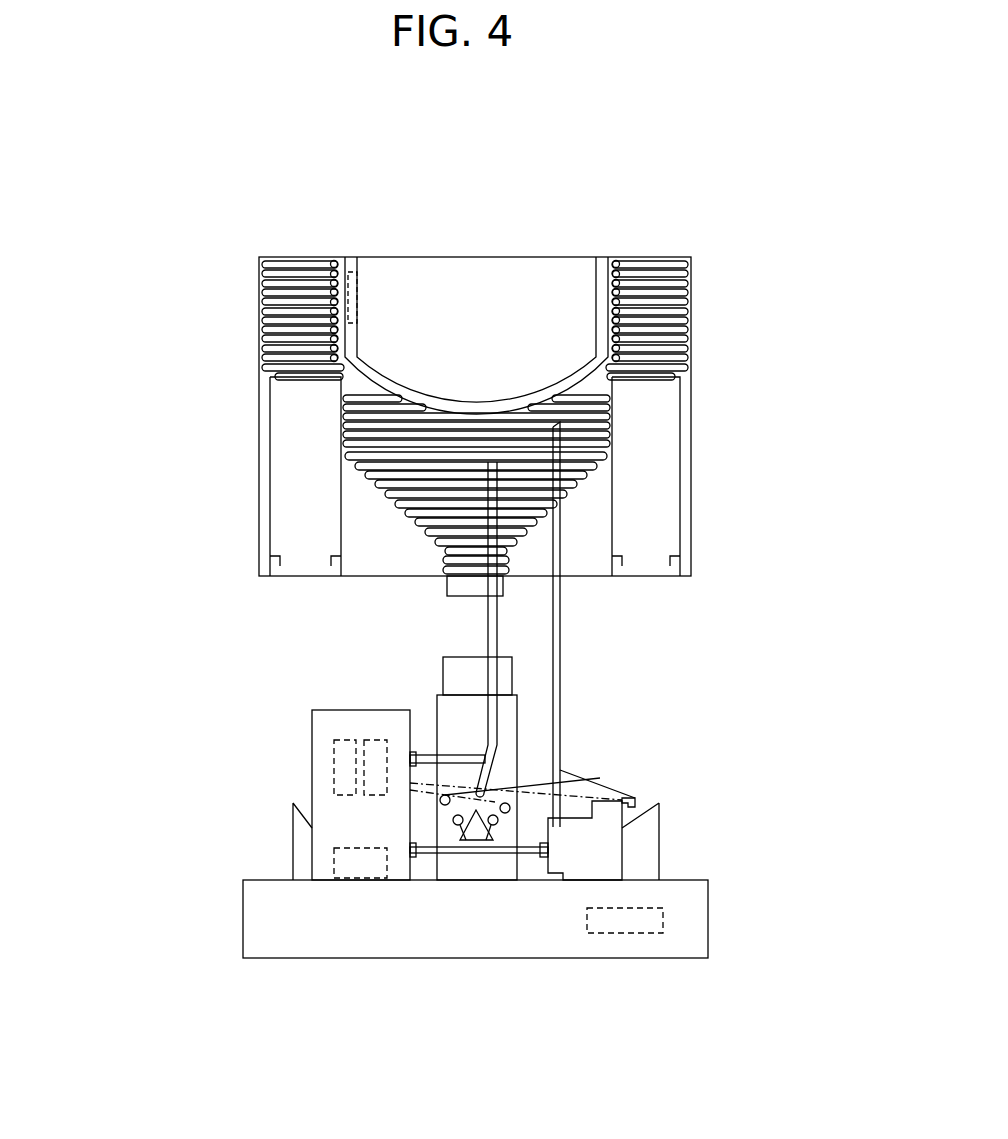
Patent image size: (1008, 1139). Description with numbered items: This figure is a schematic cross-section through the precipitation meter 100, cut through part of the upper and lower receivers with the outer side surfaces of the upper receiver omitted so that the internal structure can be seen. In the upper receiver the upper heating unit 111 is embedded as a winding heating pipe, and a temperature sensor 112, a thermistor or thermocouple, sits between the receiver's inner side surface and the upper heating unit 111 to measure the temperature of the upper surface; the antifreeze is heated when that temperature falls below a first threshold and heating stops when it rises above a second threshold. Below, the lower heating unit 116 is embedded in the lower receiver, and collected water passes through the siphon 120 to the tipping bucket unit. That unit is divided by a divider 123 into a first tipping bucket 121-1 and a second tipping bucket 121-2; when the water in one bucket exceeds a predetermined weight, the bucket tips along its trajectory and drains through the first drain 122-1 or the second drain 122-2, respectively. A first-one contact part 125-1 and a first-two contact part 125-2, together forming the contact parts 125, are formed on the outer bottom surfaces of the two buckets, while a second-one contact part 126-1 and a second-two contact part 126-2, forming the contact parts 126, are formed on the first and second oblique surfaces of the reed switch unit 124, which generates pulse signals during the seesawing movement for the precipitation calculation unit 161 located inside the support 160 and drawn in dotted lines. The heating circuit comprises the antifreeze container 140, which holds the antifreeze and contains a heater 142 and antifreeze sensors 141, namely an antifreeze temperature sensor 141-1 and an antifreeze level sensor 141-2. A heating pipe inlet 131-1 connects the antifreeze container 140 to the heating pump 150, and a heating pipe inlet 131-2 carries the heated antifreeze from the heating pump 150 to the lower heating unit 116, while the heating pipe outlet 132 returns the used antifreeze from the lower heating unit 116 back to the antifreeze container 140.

The precipitation meter 100 is at (204, 173).
The upper heating unit 111 is at (268, 361).
The temperature sensor 112 is at (350, 275).
The lower heating unit 116 is at (408, 525).
The siphon 120 is at (448, 591).
The first tipping bucket 121-1 is at (623, 797).
The second tipping bucket 121-2 is at (423, 753).
The first drain 122-1 is at (650, 823).
The second drain 122-2 is at (290, 825).
The divider 123 is at (480, 800).
The reed switch unit 124 is at (455, 810).
The contact parts 125 is at (652, 745).
The (1_1)-st contact part 125-1 is at (603, 787).
The (1_2)-nd contact part 125-2 is at (483, 765).
The contact parts 126 is at (487, 960).
The (2_1)-st contact part 126-1 is at (495, 826).
The (2_2)-nd contact part 126-2 is at (458, 826).
The heating pipe inlet 131-1 is at (528, 850).
The heating pipe inlet 131-2 is at (562, 605).
The heating pipe outlet 132 is at (493, 667).
The antifreeze container 140 is at (320, 838).
The antifreeze sensors 141 is at (229, 728).
The antifreeze temperature sensor 141-1 is at (345, 752).
The antifreeze level sensor 141-2 is at (348, 787).
The heater 142 is at (345, 862).
The heating pump 150 is at (597, 868).
The support 160 is at (242, 918).
The precipitation calculation unit 161 is at (665, 920).